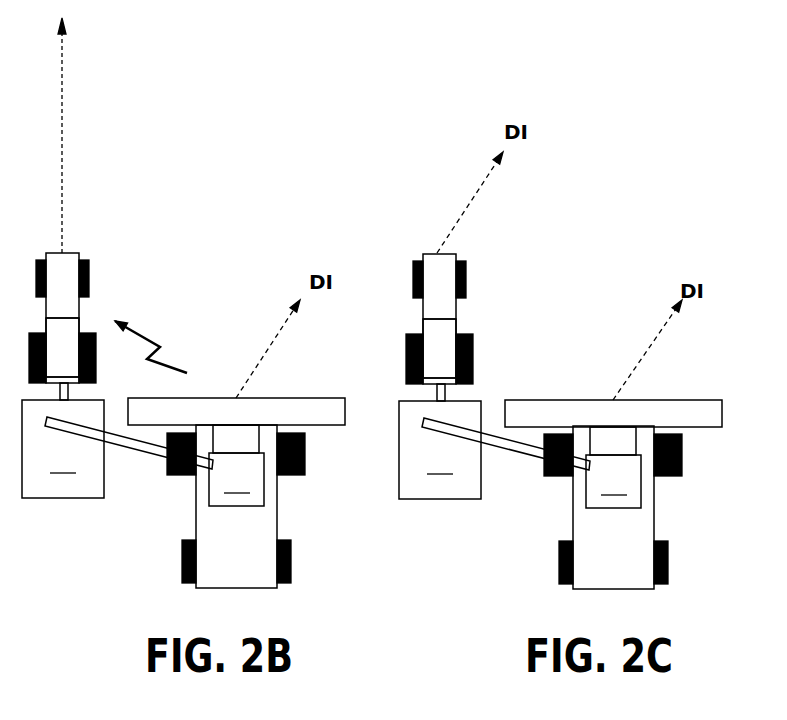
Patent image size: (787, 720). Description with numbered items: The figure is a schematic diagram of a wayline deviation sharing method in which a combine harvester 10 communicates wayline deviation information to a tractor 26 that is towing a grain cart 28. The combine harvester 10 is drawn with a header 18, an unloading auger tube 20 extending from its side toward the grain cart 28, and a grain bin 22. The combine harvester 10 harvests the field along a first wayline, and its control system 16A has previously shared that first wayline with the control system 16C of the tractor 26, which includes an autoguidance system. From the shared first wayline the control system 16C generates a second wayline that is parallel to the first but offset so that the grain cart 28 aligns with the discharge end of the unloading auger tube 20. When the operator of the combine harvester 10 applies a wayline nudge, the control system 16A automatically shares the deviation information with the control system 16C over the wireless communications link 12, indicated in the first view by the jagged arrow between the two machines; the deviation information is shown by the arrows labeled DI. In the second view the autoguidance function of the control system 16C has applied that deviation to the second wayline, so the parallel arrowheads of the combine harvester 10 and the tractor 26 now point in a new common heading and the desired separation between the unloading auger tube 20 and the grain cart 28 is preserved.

In FIG. 2B, the combine harvester 10 is at (278, 511).
In FIG. 2C, the combine harvester 10 is at (656, 507).
In FIG. 2B, the wireless communications link 12 is at (162, 346).
In FIG. 2B, the control system 16A is at (238, 440).
In FIG. 2C, the control system 16A is at (657, 404).
In FIG. 2B, the control system 16C is at (64, 338).
In FIG. 2C, the control system 16C is at (479, 316).
In FIG. 2B, the header 18 is at (202, 398).
In FIG. 2C, the header 18 is at (613, 374).
In FIG. 2B, the unloading auger tube 20 is at (137, 455).
In FIG. 2C, the unloading auger tube 20 is at (506, 488).
In FIG. 2B, the grain bin 22 is at (236, 479).
In FIG. 2C, the grain bin 22 is at (613, 481).
In FIG. 2B, the tractor 26 is at (78, 253).
In FIG. 2C, the tractor 26 is at (425, 276).
In FIG. 2B, the grain cart 28 is at (63, 449).
In FIG. 2C, the grain cart 28 is at (440, 450).